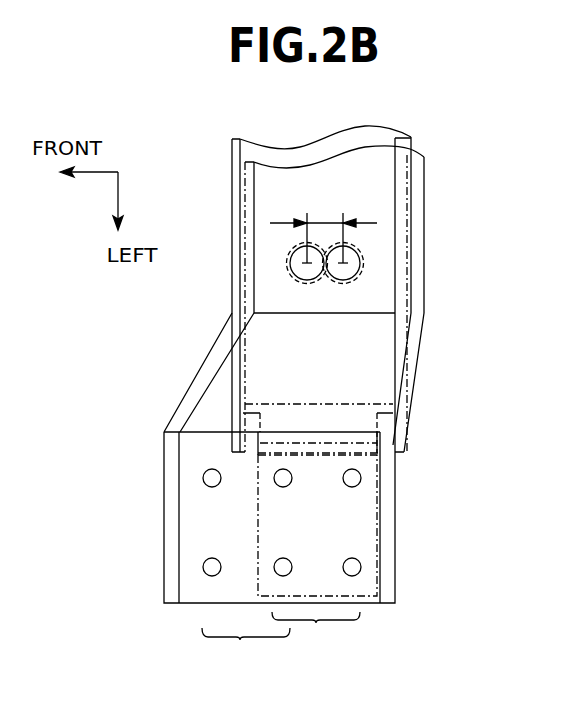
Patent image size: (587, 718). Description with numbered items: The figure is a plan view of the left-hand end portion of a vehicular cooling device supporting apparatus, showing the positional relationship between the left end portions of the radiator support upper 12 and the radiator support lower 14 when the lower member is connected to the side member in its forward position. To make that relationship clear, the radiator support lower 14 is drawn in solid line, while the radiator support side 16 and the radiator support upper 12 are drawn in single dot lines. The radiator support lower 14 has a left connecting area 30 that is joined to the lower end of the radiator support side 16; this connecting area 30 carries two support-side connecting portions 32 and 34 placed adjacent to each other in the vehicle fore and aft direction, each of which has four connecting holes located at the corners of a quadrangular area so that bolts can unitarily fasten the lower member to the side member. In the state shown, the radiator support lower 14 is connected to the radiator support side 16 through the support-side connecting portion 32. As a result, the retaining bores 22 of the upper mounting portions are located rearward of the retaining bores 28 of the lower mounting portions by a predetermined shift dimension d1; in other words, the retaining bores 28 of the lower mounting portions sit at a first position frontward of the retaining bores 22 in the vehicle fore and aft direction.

The radiator support upper 12 is at (290, 157).
The radiator support lower 14 is at (218, 403).
The radiator support side 16 is at (316, 550).
The retaining bore of the upper mounting portion 22 is at (362, 257).
The retaining bore of the lower mounting portion 28 is at (290, 272).
The connecting area 30 is at (143, 530).
The support-side connecting portion 32 is at (317, 554).
The support-side connecting portion 34 is at (246, 568).
The shift dimension d1 is at (323, 227).